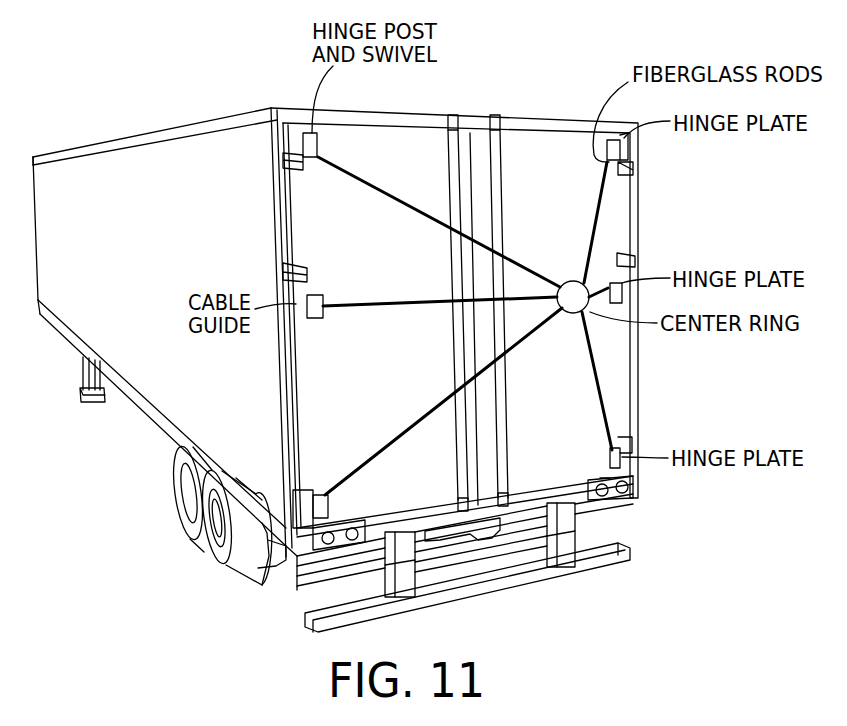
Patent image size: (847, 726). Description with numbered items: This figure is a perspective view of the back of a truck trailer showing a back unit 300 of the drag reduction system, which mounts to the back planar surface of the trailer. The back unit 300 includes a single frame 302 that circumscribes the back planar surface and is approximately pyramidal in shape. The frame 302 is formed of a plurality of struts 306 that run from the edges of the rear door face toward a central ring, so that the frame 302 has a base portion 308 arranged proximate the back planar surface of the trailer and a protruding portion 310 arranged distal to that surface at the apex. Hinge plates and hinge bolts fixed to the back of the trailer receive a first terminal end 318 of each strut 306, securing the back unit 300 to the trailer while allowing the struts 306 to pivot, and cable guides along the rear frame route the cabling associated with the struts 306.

The back unit 300 is at (509, 108).
The frame 302 is at (600, 210).
The struts 306 is at (380, 194).
The base portion 308 is at (597, 458).
The protruding portion 310 is at (592, 279).
The first terminal end 318 is at (634, 168).